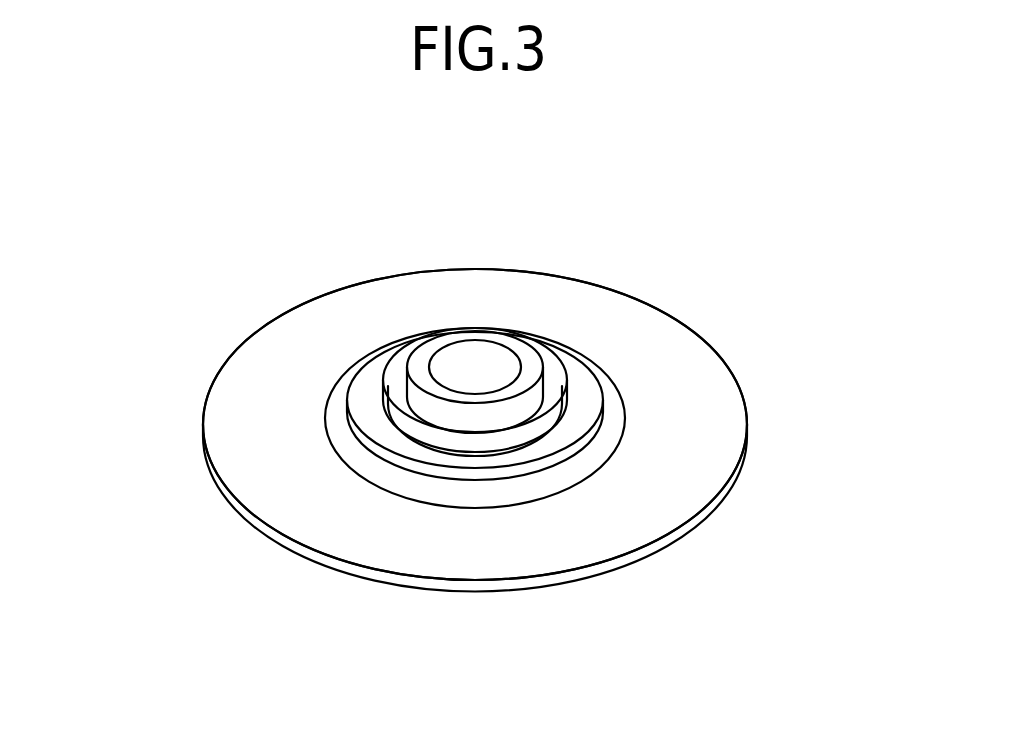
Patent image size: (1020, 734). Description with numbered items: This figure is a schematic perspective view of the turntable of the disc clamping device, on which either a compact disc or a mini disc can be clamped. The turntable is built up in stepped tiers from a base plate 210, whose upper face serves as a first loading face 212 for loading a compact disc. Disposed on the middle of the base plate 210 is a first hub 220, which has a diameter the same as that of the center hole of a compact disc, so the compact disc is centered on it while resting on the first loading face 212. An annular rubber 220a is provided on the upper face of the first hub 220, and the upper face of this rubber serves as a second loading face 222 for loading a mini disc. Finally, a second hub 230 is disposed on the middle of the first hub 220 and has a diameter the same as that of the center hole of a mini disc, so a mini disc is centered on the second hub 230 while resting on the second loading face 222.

The base plate 210 is at (747, 455).
The first loading face 212 is at (643, 507).
The first hub 220 is at (622, 432).
The annular rubber 220a is at (377, 453).
The second loading face 222 is at (583, 390).
The second hub 230 is at (420, 357).